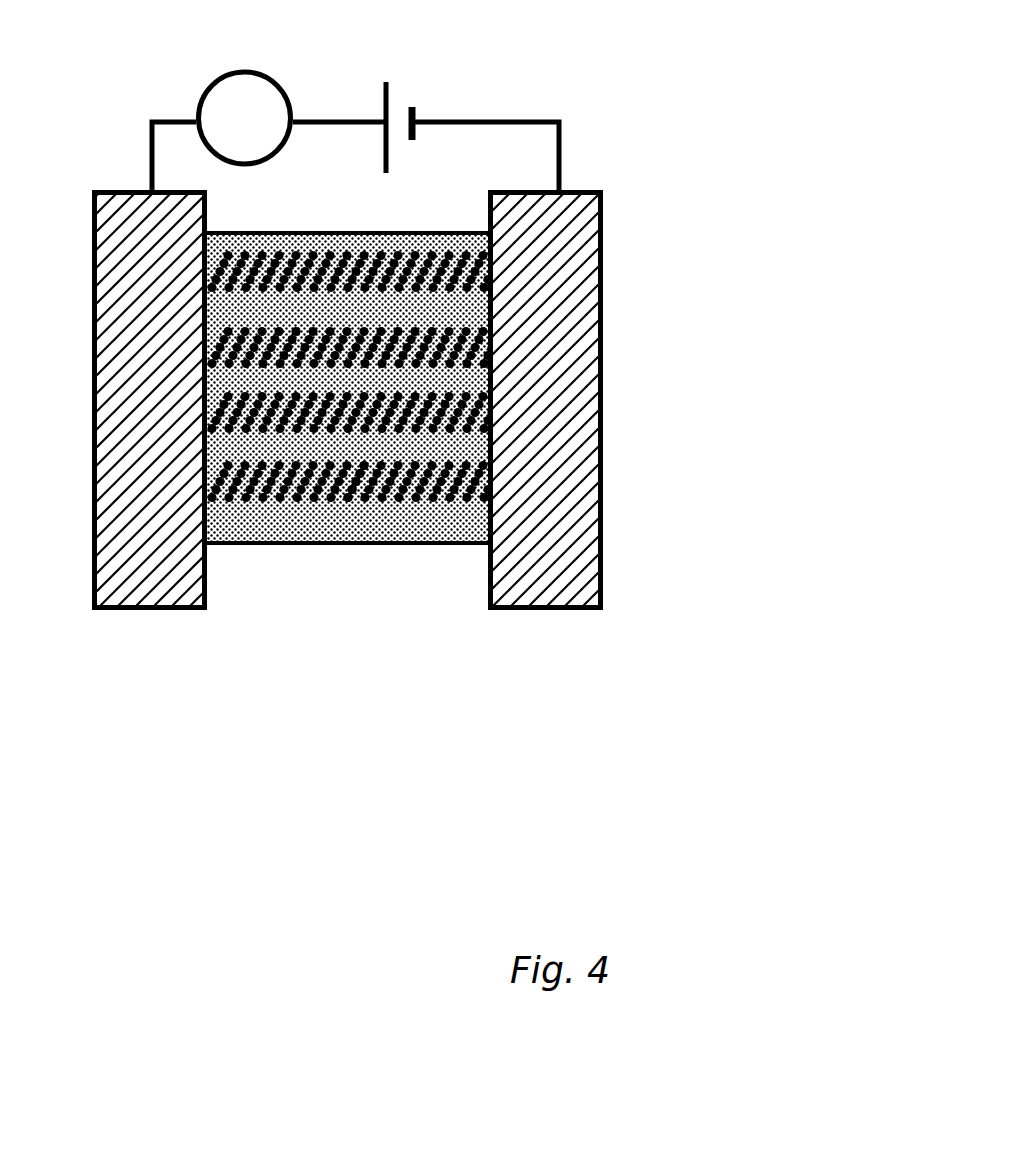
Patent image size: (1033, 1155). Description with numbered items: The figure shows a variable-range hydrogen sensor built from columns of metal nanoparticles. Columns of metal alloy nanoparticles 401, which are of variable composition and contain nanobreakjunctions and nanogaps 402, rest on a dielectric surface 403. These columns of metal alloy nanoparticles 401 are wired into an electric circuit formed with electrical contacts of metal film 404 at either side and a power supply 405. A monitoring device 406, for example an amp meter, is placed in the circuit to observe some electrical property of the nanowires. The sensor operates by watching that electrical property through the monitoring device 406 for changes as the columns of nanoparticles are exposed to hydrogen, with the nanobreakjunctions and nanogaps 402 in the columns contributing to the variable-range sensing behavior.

The columns of metal alloy nanoparticles 401 is at (488, 281).
The nanobreakjunctions and nanogaps 402 is at (352, 497).
The dielectric surface 403 is at (413, 515).
The electrical contacts of metal film 404 is at (603, 207).
The power supply 405 is at (427, 88).
The monitoring device 406 is at (207, 88).